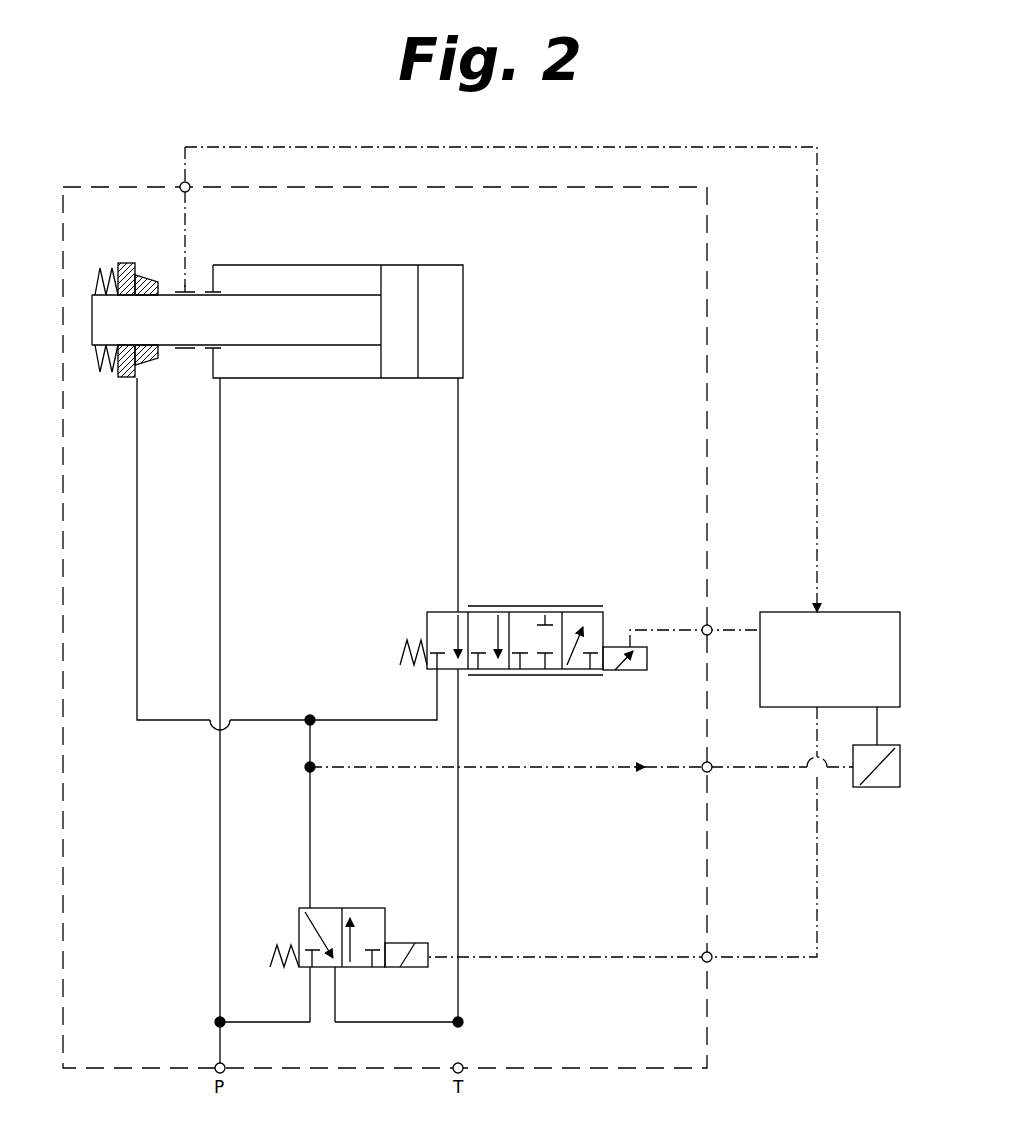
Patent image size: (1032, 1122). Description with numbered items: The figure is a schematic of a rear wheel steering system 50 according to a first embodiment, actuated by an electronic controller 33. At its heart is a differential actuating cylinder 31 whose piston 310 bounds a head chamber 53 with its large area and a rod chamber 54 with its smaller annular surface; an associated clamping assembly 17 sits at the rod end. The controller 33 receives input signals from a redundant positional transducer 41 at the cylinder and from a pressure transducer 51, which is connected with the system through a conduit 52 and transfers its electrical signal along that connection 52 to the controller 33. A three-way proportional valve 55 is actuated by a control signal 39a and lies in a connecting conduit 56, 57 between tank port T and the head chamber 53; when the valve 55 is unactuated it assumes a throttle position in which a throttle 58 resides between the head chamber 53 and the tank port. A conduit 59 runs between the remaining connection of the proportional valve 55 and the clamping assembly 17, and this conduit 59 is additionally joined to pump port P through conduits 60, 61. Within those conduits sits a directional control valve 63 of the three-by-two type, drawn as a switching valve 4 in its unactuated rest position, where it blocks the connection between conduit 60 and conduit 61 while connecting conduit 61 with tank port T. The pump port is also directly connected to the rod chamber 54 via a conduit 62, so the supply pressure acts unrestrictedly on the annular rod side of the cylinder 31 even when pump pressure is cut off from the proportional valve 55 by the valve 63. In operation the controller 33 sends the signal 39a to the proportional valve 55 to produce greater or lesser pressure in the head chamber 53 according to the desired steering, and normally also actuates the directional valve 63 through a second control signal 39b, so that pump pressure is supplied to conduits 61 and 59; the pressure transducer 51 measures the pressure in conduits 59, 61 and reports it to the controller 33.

The switching valve 4 is at (327, 925).
The clamping assembly 17 is at (108, 378).
The actuating cylinder 31 is at (338, 265).
The piston 310 is at (401, 272).
The electronic controller 33 is at (853, 612).
The control signal 39a is at (654, 628).
The control signal 39b is at (817, 900).
The redundant positional transducer 41 is at (198, 288).
The rear wheel steering system 50 is at (712, 1006).
The pressure transducer 51 is at (870, 787).
The conduit 52 is at (742, 765).
The head chamber 53 is at (458, 308).
The rod chamber 54 is at (340, 378).
The three-way proportional valve 55 is at (540, 678).
The connecting conduit 56 is at (460, 845).
The connecting conduit 57 is at (460, 440).
The throttle 58 is at (462, 632).
The conduit 59 is at (272, 720).
The conduit 60 is at (262, 1022).
The conduit 61 is at (312, 832).
The conduit 62 is at (222, 845).
The 3/2 directional control valve 63 is at (362, 976).